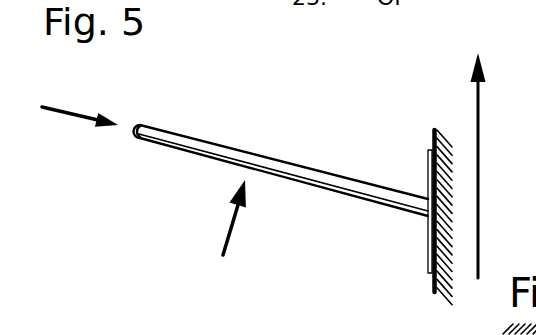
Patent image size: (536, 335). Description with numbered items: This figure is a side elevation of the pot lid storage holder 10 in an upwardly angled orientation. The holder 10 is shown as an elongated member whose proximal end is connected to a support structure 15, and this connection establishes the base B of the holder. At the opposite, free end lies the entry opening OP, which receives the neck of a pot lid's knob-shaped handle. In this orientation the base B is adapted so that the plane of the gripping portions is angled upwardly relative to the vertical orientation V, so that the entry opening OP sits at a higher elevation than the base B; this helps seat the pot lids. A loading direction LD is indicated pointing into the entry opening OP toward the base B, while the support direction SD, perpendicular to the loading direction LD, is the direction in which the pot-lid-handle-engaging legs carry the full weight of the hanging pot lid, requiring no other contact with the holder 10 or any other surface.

The pot lid storage holder 10 is at (396, 72).
The support structure 15 is at (428, 245).
The base B is at (416, 186).
The entry opening OP is at (126, 113).
The loading direction LD is at (62, 113).
The support direction SD is at (230, 227).
The vertical orientation V is at (479, 187).